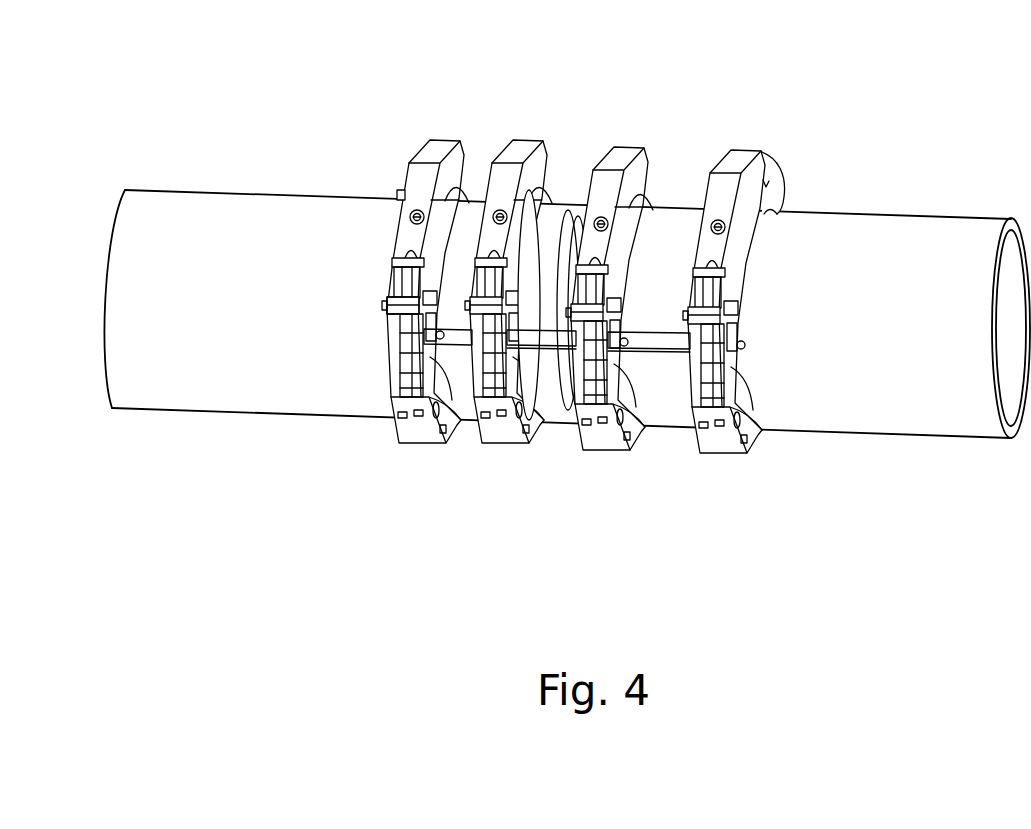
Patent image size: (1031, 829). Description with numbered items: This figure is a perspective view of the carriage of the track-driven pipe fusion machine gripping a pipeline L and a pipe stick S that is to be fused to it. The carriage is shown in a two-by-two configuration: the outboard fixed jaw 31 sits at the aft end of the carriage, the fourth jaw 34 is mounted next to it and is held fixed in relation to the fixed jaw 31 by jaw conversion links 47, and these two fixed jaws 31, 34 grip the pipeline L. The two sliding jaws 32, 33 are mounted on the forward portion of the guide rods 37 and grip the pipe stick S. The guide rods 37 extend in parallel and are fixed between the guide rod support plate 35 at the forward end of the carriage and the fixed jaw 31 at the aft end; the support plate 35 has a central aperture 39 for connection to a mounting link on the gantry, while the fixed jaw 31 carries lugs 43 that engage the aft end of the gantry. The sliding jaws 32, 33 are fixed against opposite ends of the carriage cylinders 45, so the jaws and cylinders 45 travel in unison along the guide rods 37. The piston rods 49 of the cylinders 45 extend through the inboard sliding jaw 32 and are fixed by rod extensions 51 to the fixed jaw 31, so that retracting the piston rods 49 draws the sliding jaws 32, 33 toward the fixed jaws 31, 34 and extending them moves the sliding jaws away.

The fixed jaw 31 is at (447, 130).
The sliding jaw 32 is at (615, 125).
The sliding jaw 33 is at (738, 130).
The fourth jaw 34 is at (533, 128).
The guide rod support plate 35 is at (784, 196).
The guide rods 37 is at (641, 328).
The central aperture 39 is at (766, 186).
The lugs 43 is at (397, 190).
The carriage cylinders 45 is at (655, 355).
The jaw conversion links 47 is at (440, 366).
The piston rods 49 is at (558, 400).
The rod extensions 51 is at (536, 422).
The pipeline L is at (237, 193).
The pipe stick S is at (940, 217).